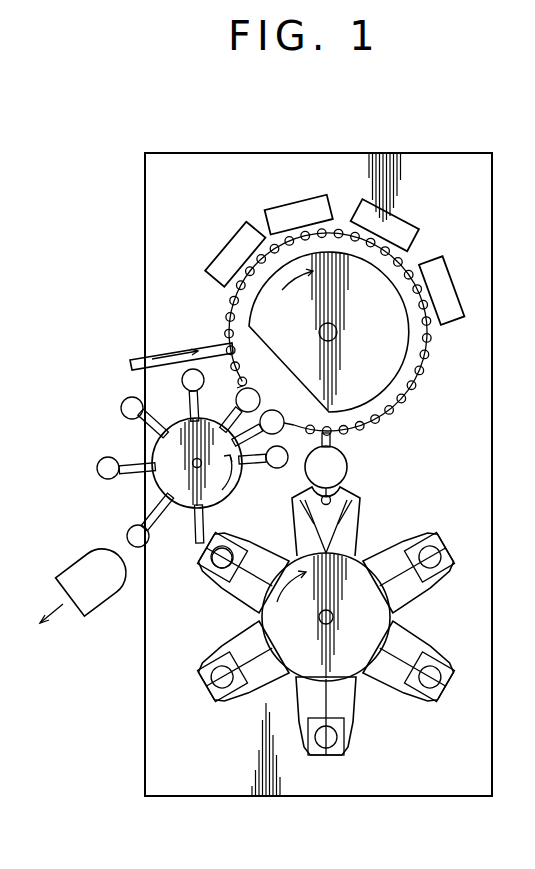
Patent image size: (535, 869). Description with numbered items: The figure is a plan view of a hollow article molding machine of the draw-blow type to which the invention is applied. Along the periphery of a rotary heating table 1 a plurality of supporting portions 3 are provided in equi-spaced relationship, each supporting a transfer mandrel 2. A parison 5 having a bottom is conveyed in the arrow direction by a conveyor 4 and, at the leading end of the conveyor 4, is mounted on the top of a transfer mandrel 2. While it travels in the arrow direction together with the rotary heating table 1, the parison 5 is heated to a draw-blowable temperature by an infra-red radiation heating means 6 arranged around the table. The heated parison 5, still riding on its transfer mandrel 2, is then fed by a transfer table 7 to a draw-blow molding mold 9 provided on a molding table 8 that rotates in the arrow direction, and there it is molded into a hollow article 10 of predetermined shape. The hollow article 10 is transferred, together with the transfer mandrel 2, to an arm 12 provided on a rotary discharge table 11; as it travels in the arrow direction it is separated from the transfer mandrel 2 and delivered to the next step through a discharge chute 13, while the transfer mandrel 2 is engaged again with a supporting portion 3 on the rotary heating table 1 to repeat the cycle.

The rotary heating table 1 is at (422, 360).
The transfer mandrel 2 is at (238, 384).
The supporting portion 3 is at (284, 428).
The conveyor 4 is at (176, 352).
The parison 5 is at (226, 322).
The infra-red radiation heating means 6 is at (300, 204).
The transfer table 7 is at (354, 450).
The molding table 8 is at (380, 634).
The draw-blow molding mold 9 is at (356, 535).
The hollow article 10 is at (277, 469).
The rotary discharge table 11 is at (197, 510).
The arm 12 is at (208, 520).
The discharge chute 13 is at (104, 588).